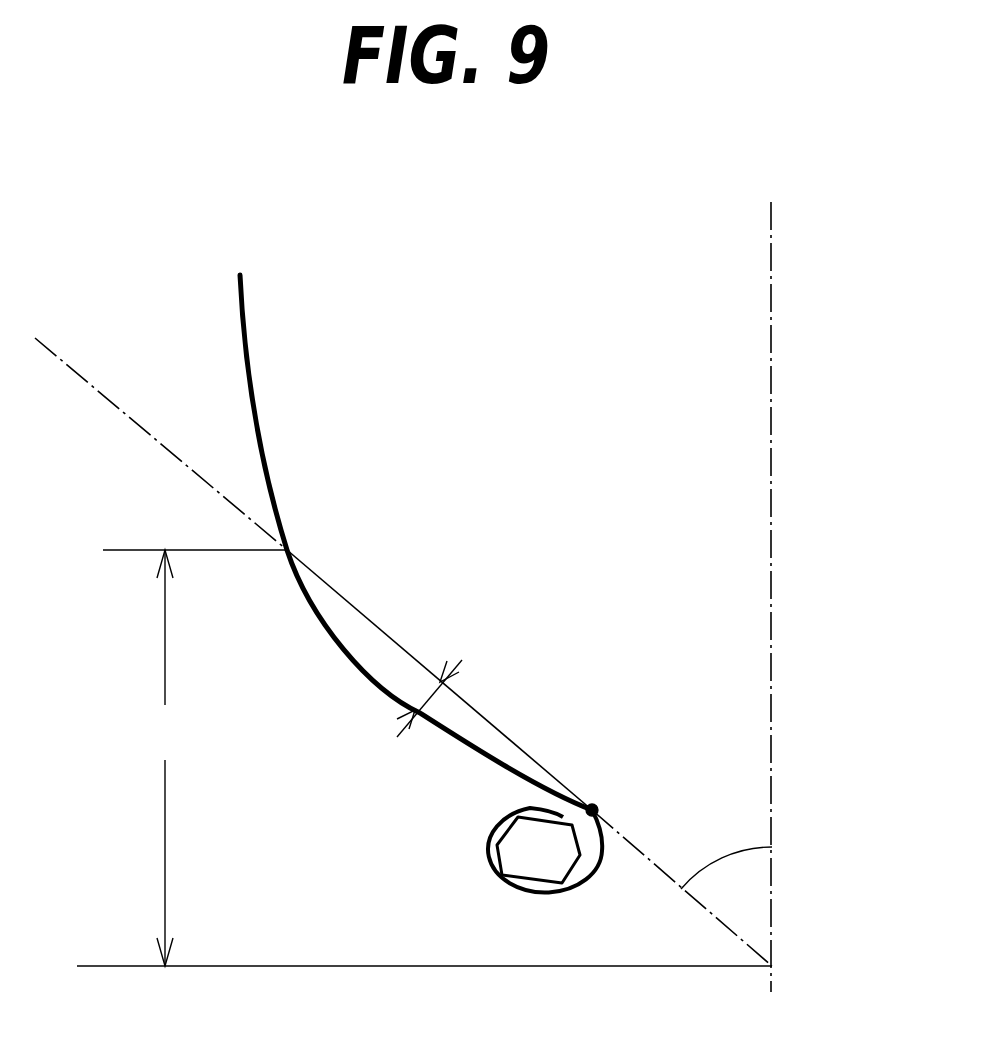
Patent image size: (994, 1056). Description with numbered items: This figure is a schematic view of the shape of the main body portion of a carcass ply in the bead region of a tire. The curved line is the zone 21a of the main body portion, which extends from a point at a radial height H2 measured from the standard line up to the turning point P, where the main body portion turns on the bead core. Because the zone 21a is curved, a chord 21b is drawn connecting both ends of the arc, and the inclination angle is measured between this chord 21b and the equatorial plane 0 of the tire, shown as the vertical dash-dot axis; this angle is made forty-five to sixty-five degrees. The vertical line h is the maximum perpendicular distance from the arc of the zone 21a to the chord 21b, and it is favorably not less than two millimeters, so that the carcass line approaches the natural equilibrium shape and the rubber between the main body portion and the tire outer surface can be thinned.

The equatorial plane 0 is at (771, 450).
The zone of the main body portion 21a is at (373, 673).
The chord 21b is at (400, 647).
The turning point P is at (600, 808).
The vertical line h is at (423, 705).
The height of any point measured from the standard line H2 is at (195, 758).